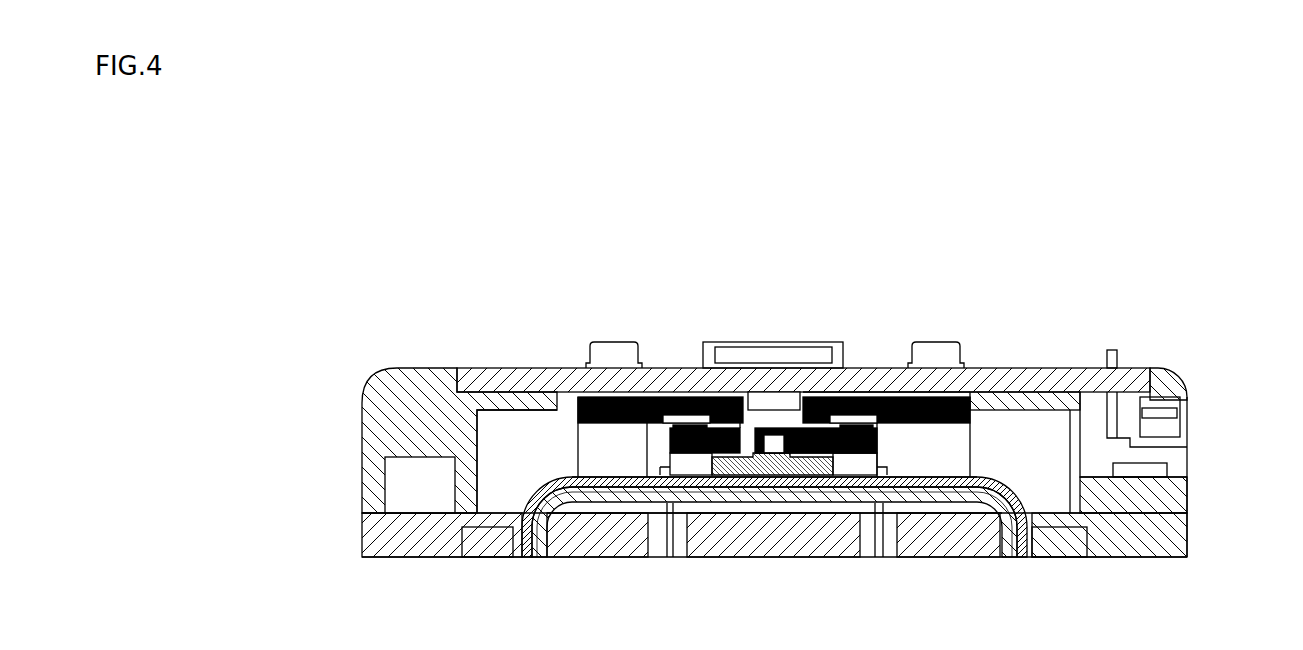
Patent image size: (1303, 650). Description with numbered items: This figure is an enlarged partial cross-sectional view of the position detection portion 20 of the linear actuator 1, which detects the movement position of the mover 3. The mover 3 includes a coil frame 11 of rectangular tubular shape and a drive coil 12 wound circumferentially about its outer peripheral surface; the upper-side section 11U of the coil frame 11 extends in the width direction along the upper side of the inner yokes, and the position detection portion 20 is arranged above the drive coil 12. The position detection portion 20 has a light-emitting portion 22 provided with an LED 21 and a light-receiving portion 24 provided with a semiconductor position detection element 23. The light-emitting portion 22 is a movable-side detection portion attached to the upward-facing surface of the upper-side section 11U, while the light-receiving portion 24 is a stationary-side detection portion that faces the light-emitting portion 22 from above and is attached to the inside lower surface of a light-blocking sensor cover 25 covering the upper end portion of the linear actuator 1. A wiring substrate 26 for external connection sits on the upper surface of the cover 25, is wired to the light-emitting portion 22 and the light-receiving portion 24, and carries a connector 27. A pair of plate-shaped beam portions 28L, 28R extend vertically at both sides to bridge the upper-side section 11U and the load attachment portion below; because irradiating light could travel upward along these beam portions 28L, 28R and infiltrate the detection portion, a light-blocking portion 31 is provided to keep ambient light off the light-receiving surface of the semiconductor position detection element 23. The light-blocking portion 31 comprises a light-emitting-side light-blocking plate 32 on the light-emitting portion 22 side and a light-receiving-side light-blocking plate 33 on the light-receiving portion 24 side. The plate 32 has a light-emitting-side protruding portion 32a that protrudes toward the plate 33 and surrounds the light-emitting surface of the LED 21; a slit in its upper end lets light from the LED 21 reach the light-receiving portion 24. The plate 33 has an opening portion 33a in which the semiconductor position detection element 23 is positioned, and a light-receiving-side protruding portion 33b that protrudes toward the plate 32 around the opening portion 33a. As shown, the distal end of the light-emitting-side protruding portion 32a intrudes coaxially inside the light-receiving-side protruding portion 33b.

The linear actuator 1 is at (572, 285).
The mover 3 is at (490, 500).
The coil frame 11 is at (522, 546).
The upper-side section 11U is at (762, 492).
The drive coil 12 is at (517, 527).
The position detection portion 20 is at (985, 258).
The LED 21 is at (775, 447).
The light-emitting portion 22 is at (815, 448).
The semiconductor position detection element 23 is at (773, 397).
The light-receiving portion 24 is at (795, 380).
The light-blocking sensor cover 25 is at (372, 372).
The wiring substrate 26 is at (527, 366).
The connector 27 is at (767, 340).
The beam portion 28L is at (883, 534).
The beam portion 28R is at (660, 533).
The light-blocking portion 31 is at (1258, 512).
The light-emitting-side light-blocking plate 32 is at (888, 437).
The light-emitting-side protruding portion 32a is at (714, 462).
The light-receiving-side light-blocking plate 33 is at (975, 416).
The opening portion 33a is at (747, 393).
The light-receiving-side protruding portion 33b is at (705, 420).